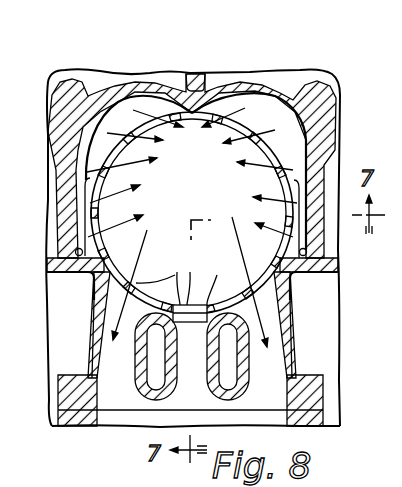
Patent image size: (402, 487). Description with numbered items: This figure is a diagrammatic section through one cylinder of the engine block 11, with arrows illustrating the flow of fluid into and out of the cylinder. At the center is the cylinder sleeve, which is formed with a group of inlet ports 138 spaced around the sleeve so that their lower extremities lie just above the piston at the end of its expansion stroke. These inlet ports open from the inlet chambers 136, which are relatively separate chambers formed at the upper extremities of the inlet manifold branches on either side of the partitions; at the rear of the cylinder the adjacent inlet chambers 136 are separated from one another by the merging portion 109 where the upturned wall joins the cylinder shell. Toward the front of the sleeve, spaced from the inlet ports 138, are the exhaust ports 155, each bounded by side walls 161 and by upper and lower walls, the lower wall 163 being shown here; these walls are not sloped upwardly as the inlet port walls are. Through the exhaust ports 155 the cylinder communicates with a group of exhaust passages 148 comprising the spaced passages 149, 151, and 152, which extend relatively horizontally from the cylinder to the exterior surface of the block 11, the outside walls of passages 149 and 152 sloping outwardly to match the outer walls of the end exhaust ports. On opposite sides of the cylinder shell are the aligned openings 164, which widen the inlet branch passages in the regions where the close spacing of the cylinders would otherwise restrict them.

The engine block 11 is at (322, 391).
The merging portion of the wall and cylinder shell 109 is at (193, 89).
The inlet chamber 136 is at (120, 108).
The group of inlet ports 138 is at (253, 120).
The group of exhaust passages 148 is at (117, 397).
The exhaust passage 149 is at (108, 381).
The exhaust passage 151 is at (190, 388).
The exhaust passage 152 is at (316, 408).
The exhaust ports 155 is at (136, 281).
The side wall of exhaust port 161 is at (178, 276).
The lower wall of exhaust port 163 is at (212, 278).
The opening in cylinder shell 164 is at (78, 258).